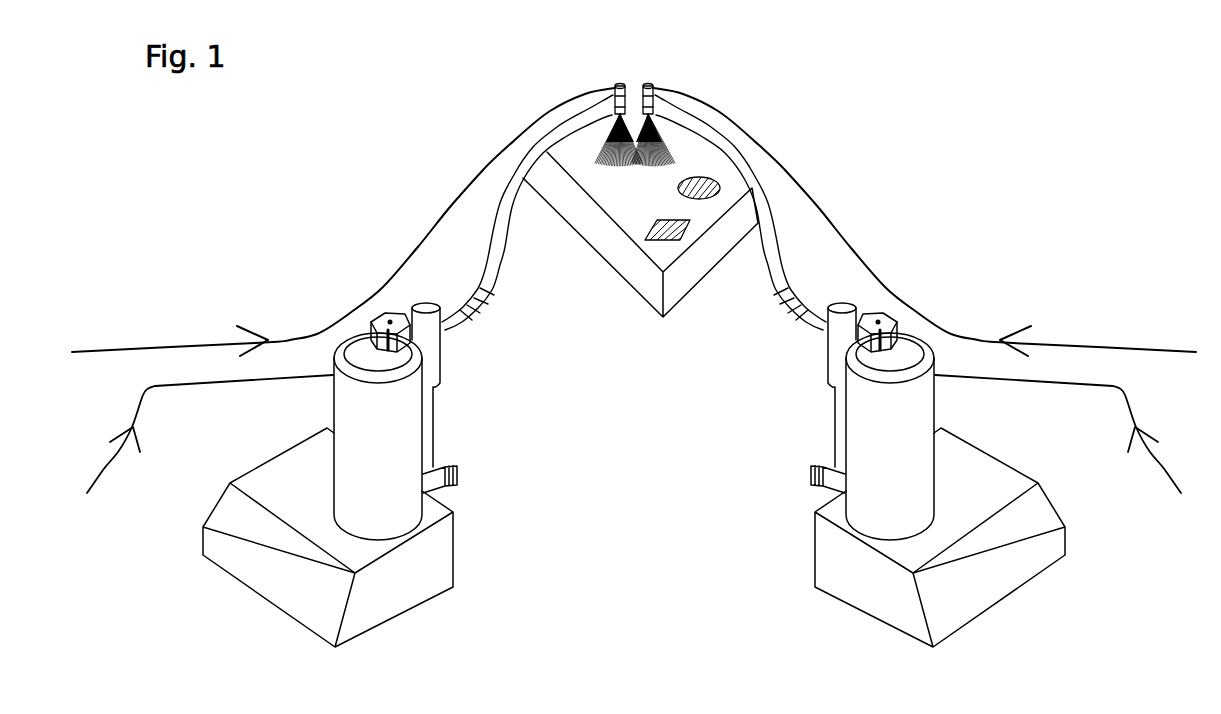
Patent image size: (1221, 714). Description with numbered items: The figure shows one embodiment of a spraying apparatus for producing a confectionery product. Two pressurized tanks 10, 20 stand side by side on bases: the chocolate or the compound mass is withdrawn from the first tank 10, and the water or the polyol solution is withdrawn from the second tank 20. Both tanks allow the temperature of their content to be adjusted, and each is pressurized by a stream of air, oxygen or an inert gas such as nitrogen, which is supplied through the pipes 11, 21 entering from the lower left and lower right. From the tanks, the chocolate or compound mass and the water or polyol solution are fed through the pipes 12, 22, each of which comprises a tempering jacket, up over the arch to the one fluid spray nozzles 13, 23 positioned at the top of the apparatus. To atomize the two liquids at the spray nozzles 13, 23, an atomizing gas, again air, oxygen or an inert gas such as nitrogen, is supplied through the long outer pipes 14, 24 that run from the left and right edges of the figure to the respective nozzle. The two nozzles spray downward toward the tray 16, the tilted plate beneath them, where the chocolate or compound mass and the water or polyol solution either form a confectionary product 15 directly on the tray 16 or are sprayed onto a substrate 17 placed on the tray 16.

The pressurized tank 10 is at (487, 535).
The pipe 11 is at (157, 397).
The pipe 12 is at (500, 278).
The one fluid spray nozzle 13 is at (617, 83).
The pipe 14 is at (133, 345).
The confectionary product 15 is at (700, 180).
The tray 16 is at (654, 288).
The substrate 17 is at (676, 245).
The pressurized tank 20 is at (780, 481).
The pipe 21 is at (1045, 395).
The pipe 22 is at (786, 283).
The one fluid spray nozzle 23 is at (650, 83).
The pipe 24 is at (1056, 340).